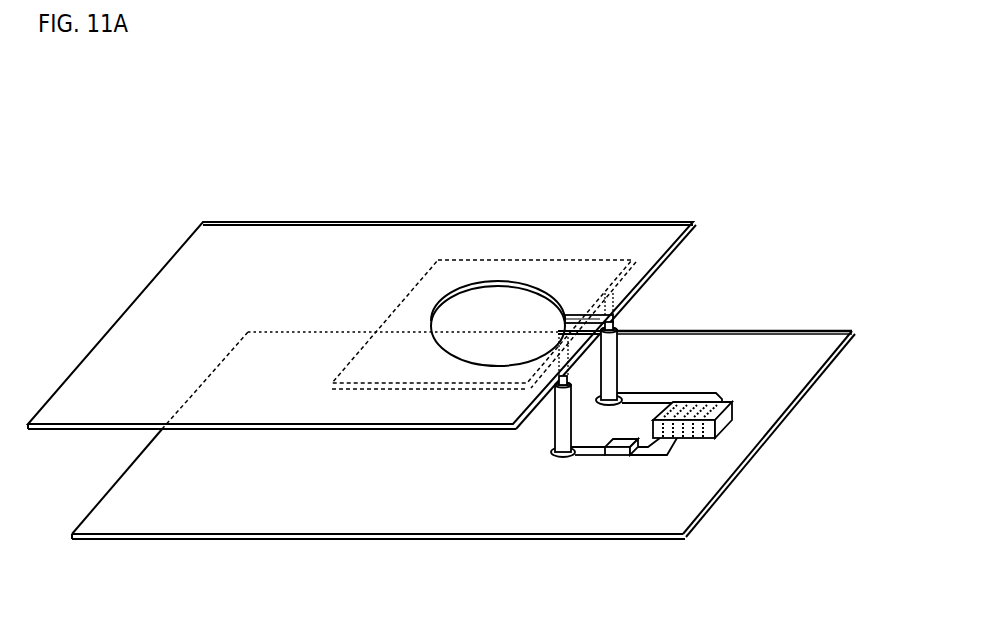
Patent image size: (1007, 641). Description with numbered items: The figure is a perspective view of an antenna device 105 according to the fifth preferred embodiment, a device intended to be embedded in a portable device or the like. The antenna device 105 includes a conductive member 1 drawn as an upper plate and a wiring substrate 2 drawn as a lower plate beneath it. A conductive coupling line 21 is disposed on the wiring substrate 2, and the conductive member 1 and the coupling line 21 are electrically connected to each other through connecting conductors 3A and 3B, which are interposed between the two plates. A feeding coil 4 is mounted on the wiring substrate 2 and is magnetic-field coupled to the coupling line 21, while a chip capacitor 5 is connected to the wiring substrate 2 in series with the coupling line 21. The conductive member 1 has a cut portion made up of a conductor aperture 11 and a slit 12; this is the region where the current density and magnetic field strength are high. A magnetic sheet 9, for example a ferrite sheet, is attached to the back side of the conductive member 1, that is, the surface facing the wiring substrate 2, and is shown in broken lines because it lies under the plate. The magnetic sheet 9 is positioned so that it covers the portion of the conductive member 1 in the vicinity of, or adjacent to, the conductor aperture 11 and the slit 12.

The antenna device 105 is at (794, 130).
The conductive member 1 is at (182, 270).
The wiring substrate 2 is at (802, 345).
The magnetic sheet 9 is at (438, 258).
The conductor aperture 11 is at (509, 306).
The slit 12 is at (593, 316).
The connecting conductor 3A is at (562, 423).
The connecting conductor 3B is at (613, 348).
The coupling line 21 is at (662, 397).
The feeding coil 4 is at (742, 403).
The chip capacitor 5 is at (615, 451).